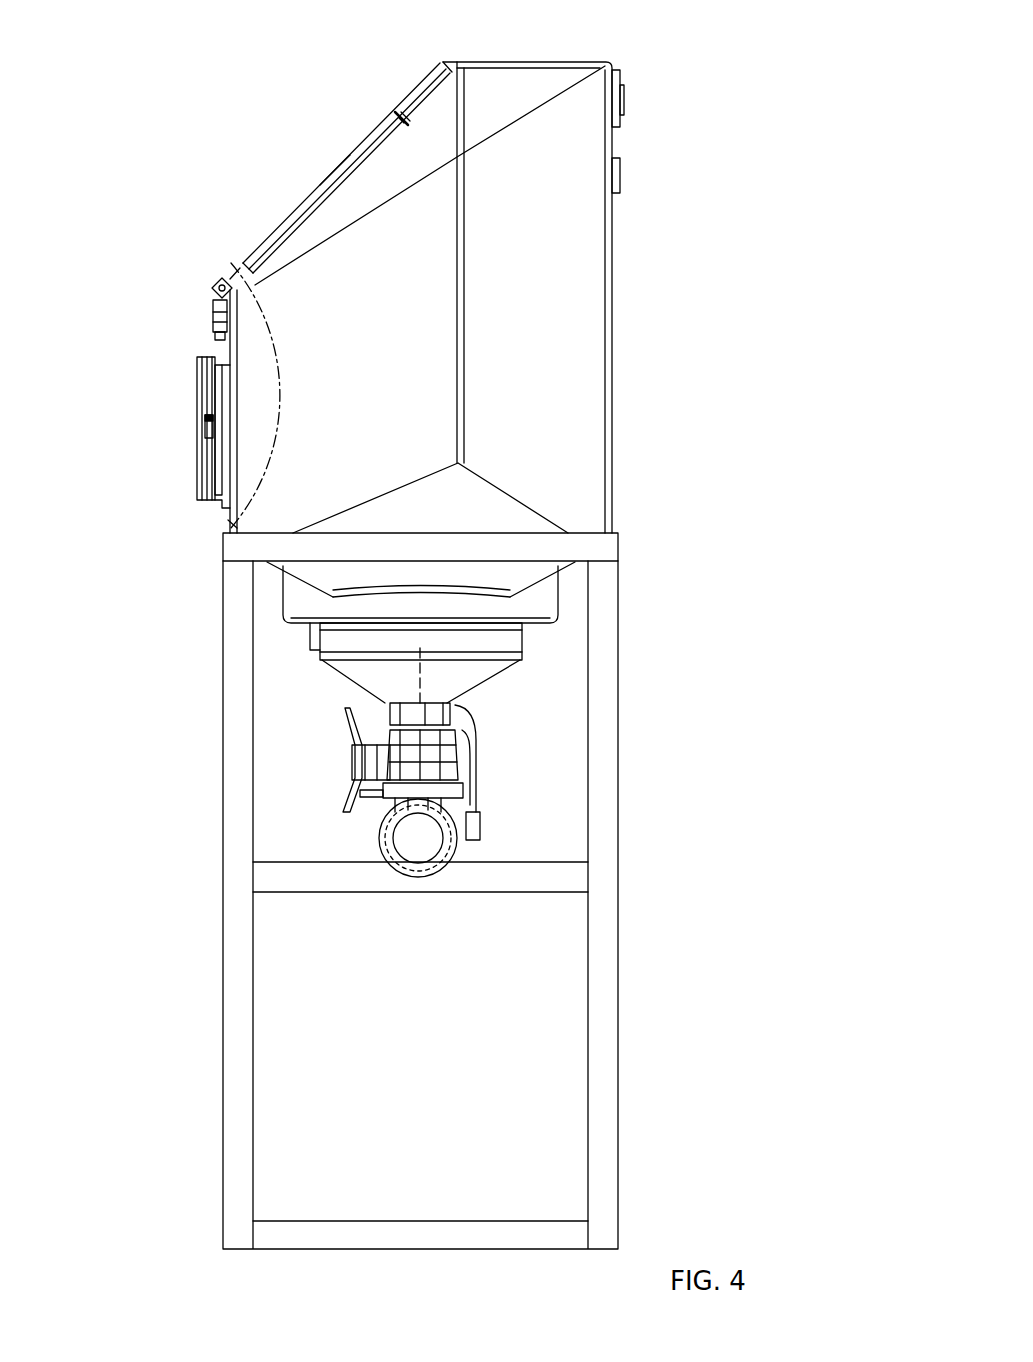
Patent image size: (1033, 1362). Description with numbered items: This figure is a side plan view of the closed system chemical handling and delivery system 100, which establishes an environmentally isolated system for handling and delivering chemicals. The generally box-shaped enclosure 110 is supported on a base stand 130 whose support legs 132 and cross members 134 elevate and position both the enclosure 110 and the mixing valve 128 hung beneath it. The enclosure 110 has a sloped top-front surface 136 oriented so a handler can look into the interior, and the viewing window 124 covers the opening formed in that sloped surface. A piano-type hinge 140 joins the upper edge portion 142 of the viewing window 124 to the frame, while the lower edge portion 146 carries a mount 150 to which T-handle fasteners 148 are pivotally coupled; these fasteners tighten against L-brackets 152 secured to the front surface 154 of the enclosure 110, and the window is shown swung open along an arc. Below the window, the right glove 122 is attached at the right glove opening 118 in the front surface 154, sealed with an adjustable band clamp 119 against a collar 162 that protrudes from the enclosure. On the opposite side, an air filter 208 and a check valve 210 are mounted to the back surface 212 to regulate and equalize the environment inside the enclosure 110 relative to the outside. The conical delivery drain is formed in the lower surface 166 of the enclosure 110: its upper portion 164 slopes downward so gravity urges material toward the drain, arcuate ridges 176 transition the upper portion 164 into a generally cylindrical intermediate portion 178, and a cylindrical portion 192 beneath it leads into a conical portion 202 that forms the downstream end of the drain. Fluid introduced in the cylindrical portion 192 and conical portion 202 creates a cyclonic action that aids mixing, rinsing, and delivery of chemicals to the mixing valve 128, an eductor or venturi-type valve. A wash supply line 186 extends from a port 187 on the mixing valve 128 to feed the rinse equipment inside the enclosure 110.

The closed system chemical handling and delivery system 100 is at (703, 95).
The enclosure 110 is at (612, 350).
The right glove opening 118 is at (215, 512).
The adjustable band clamp 119 is at (205, 426).
The right glove 122 is at (200, 392).
The viewing window 124 is at (308, 198).
The mixing valve 128 is at (322, 807).
The base stand 130 is at (175, 1100).
The support legs 132 is at (620, 1066).
The cross members 134 is at (487, 892).
The sloped top-front surface 136 is at (437, 75).
The piano-type hinge 140 is at (407, 112).
The upper edge portion 142 is at (400, 122).
The lower edge portion 146 is at (225, 278).
The T-handle fasteners 148 is at (208, 330).
The mount 150 is at (215, 292).
The L-brackets 152 is at (215, 336).
The front surface 154 is at (228, 522).
The collar 162 is at (218, 367).
The upper portion 164 is at (572, 568).
The lower surface 166 is at (522, 568).
The arcuate ridges 176 is at (452, 587).
The intermediate portion 178 is at (565, 600).
The wash supply line 186 is at (470, 738).
The port 187 is at (460, 862).
The cylindrical portion 192 is at (315, 637).
The conical portion 202 is at (495, 678).
The air filter 208 is at (620, 178).
The check valve 210 is at (617, 75).
The back surface 212 is at (612, 300).